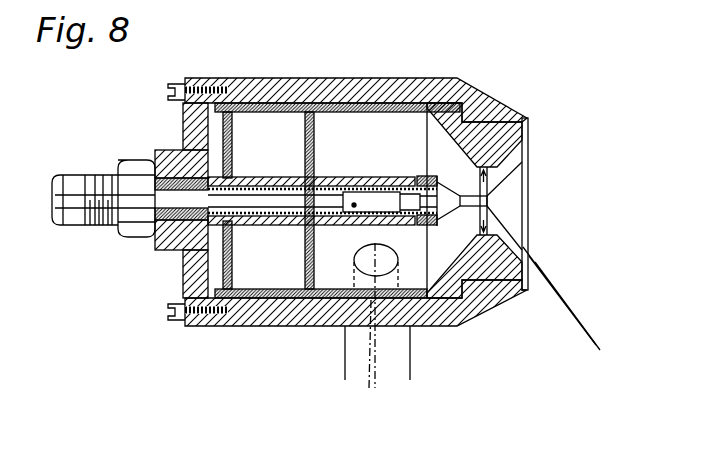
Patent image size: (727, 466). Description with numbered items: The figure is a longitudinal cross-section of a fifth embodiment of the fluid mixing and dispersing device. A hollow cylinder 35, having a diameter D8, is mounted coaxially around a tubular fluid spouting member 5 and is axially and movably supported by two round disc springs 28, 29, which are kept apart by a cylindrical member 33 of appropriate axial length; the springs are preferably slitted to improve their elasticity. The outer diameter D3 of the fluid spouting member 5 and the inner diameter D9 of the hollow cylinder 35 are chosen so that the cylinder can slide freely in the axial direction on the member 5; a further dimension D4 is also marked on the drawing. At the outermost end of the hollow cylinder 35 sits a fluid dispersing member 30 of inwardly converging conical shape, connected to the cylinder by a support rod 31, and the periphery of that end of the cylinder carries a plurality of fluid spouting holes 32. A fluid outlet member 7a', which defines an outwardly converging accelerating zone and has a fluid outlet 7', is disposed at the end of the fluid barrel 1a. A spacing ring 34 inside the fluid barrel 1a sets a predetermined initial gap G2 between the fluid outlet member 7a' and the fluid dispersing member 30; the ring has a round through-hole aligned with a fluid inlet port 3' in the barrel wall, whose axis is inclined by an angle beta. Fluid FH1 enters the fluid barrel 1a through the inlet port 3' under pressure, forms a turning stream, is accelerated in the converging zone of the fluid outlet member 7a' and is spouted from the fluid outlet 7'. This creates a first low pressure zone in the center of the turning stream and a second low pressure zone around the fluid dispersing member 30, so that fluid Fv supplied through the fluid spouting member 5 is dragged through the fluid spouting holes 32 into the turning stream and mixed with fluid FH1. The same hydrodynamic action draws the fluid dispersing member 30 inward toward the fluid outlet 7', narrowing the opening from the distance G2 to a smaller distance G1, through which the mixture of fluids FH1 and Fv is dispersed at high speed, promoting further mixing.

The cylindrical member 33 is at (266, 102).
The spacing ring 34 is at (368, 103).
The fluid spouting holes 32 is at (429, 176).
The fluid outlet member 7a' is at (503, 135).
The fluid dispersing member 30 is at (508, 205).
The support rod 31 is at (467, 216).
The fluid outlet 7' is at (478, 286).
The tubular fluid spouting member 5 is at (183, 250).
The round disc spring 29 is at (188, 318).
The round disc spring 28 is at (275, 294).
The hollow cylinder 35 is at (322, 262).
The fluid barrel 1a is at (339, 312).
The fluid inlet port 3' is at (388, 265).
The diameter of hollow cylinder D8 is at (354, 204).
The inner diameter of hollow cylinder D9 is at (372, 205).
The outer diameter of fluid spouting member D3 is at (402, 203).
The orifice diameter D4 is at (477, 186).
The smaller distance G1 is at (561, 308).
The predetermined initial gap G2 is at (575, 312).
The fluid Fv is at (40, 197).
The fluid FH1 is at (378, 410).